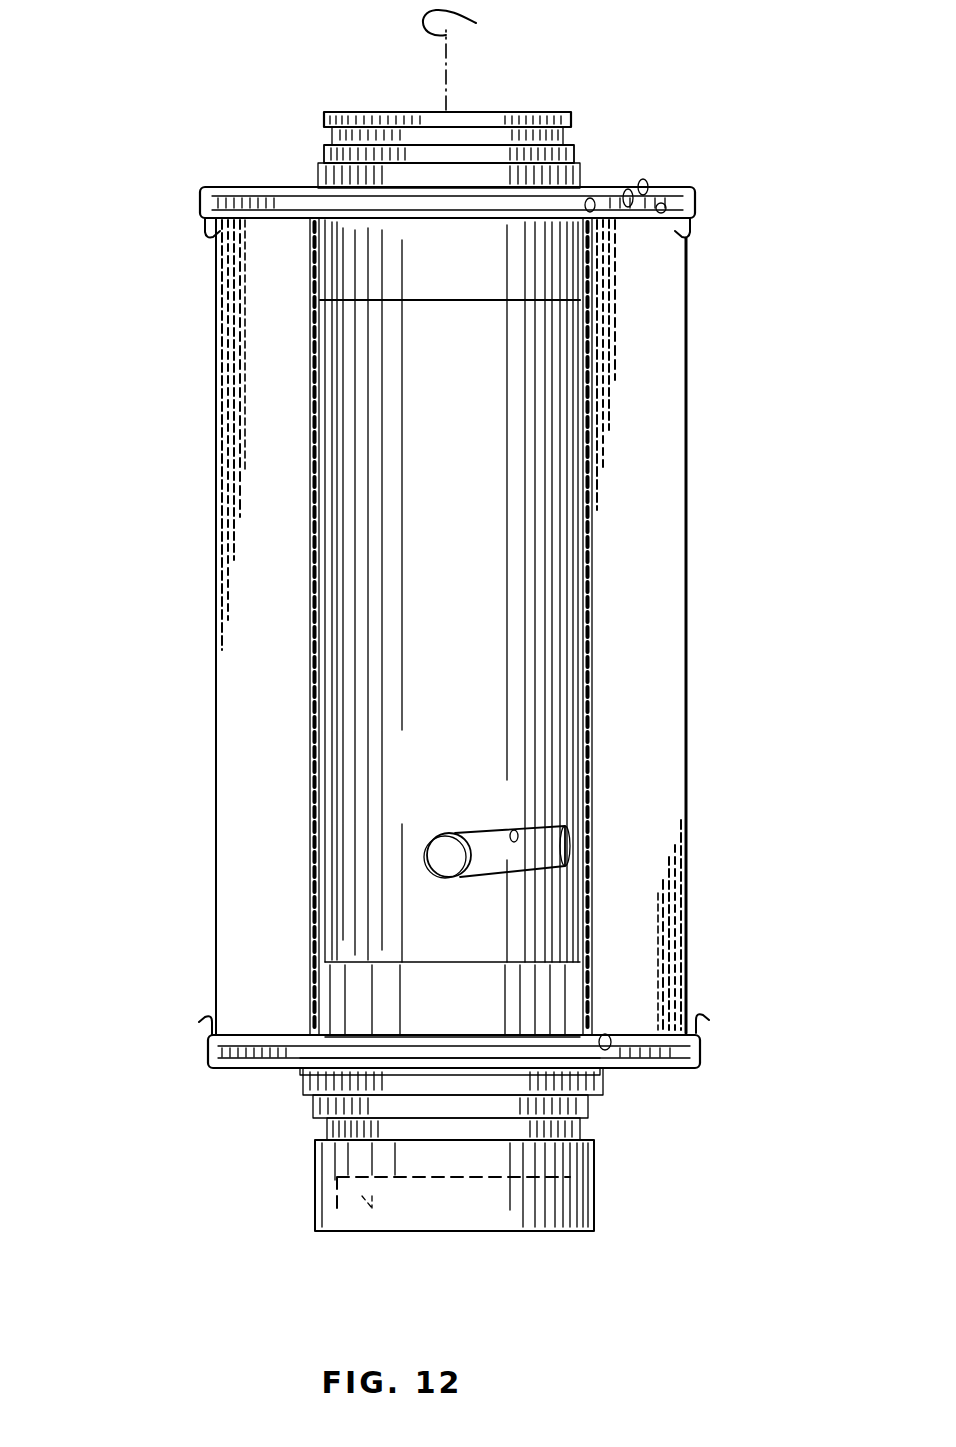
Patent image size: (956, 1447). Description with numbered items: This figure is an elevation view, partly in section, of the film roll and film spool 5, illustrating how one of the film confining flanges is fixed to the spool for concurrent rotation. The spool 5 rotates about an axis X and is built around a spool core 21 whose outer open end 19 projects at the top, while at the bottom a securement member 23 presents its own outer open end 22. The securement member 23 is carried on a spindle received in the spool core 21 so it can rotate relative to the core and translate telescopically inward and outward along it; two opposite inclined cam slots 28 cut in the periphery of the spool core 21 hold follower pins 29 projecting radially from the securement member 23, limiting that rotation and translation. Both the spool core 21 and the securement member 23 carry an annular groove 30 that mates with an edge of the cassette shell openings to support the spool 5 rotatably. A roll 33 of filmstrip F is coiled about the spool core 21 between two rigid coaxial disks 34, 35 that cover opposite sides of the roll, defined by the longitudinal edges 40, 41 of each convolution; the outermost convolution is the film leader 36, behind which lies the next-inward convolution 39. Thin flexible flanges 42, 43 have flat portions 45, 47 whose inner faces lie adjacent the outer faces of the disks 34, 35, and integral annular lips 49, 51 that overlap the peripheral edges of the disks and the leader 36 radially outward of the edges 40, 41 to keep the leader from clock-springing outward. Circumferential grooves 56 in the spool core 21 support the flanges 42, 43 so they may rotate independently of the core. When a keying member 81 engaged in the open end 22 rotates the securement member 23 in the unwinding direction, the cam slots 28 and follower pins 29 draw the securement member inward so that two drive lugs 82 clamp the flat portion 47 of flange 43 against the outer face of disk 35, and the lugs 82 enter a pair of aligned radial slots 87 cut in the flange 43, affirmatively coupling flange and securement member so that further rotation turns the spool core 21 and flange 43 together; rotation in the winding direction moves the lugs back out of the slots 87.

The axis X is at (478, 24).
The film spool 5 is at (211, 544).
The outer open end of spool core 19 is at (532, 112).
The spool core 21 is at (326, 110).
The outer open end of securement member 22 is at (533, 1232).
The securement member 23 is at (616, 1212).
The inclined cam slots 28 is at (514, 832).
The follower pins 29 is at (450, 855).
The annular groove 30 is at (332, 140).
The film roll 33 is at (213, 460).
The core disk 34 is at (623, 187).
The core disk 35 is at (250, 1032).
The film leader 36 is at (690, 873).
The next-inward convolution 39 is at (690, 937).
The longitudinal edge 40 is at (670, 213).
The longitudinal edge 41 is at (618, 1066).
The upper film confining flange 42 is at (197, 206).
The lower film confining flange 43 is at (205, 1050).
The flat portion 45 is at (245, 188).
The flat portion 47 is at (230, 1072).
The annular lip 49 is at (697, 200).
The annular lip 51 is at (702, 1050).
The circumferential grooves 56 is at (450, 192).
The keying member 81 is at (374, 1216).
The drive lugs 82 is at (298, 1077).
The radial slots 87 is at (300, 1050).
The filmstrip F is at (222, 363).